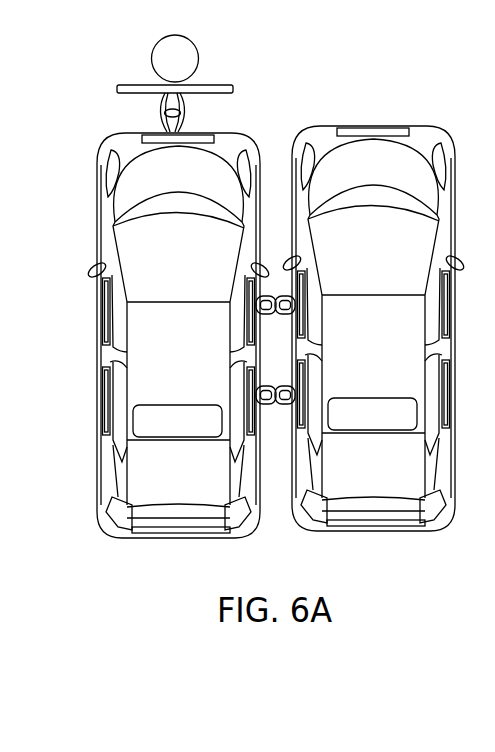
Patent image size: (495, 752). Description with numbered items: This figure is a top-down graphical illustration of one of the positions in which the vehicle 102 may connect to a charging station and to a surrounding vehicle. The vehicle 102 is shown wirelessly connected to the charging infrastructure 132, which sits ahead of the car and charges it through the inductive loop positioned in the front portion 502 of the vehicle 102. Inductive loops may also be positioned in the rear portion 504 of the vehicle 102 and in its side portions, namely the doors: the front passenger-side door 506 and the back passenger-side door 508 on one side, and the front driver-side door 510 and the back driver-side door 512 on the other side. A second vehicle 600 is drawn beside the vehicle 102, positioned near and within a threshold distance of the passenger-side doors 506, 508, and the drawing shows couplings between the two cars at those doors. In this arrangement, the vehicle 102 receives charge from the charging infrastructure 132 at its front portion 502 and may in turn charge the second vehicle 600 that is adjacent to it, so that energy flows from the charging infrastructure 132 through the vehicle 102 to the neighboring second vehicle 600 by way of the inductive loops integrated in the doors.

The charging infrastructure 132 is at (233, 88).
The vehicle 102 is at (257, 513).
The front portion 502 is at (186, 131).
The rear portion 504 is at (127, 535).
The front passenger-side door 506 is at (255, 315).
The back passenger-side door 508 is at (253, 413).
The front driver-side door 510 is at (98, 297).
The back driver-side door 512 is at (98, 393).
The second vehicle 600 is at (452, 490).